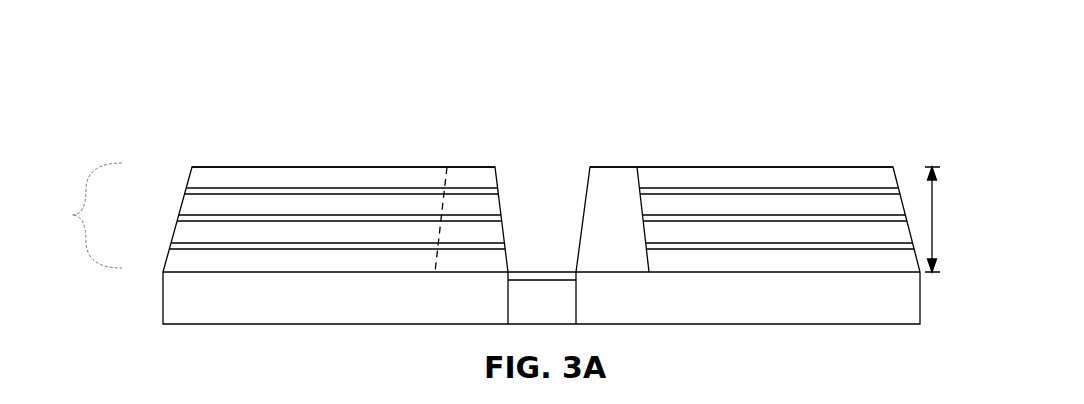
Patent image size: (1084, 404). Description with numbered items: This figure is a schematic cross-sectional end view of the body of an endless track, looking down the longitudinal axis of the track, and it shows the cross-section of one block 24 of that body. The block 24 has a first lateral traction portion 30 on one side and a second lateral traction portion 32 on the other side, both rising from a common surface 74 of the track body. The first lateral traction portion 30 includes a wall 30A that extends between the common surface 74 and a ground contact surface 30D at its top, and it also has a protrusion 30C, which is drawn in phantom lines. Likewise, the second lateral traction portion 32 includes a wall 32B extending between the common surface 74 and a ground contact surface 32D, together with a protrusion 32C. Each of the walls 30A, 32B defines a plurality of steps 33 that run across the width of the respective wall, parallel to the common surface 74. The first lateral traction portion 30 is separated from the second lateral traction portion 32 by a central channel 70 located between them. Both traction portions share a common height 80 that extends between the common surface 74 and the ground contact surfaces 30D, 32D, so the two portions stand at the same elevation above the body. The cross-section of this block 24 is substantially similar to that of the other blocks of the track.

The block 24 is at (83, 215).
The first lateral traction portion 30 is at (266, 131).
The wall 30A is at (337, 218).
The protrusion 30C is at (468, 178).
The ground contact surface 30D is at (357, 167).
The second lateral traction portion 32 is at (796, 118).
The wall 32B is at (776, 218).
The protrusion 32C is at (613, 178).
The ground contact surface 32D is at (745, 167).
The steps 33 is at (166, 195).
The central channel 70 is at (542, 264).
The common surface 74 is at (151, 270).
The common height 80 is at (947, 219).